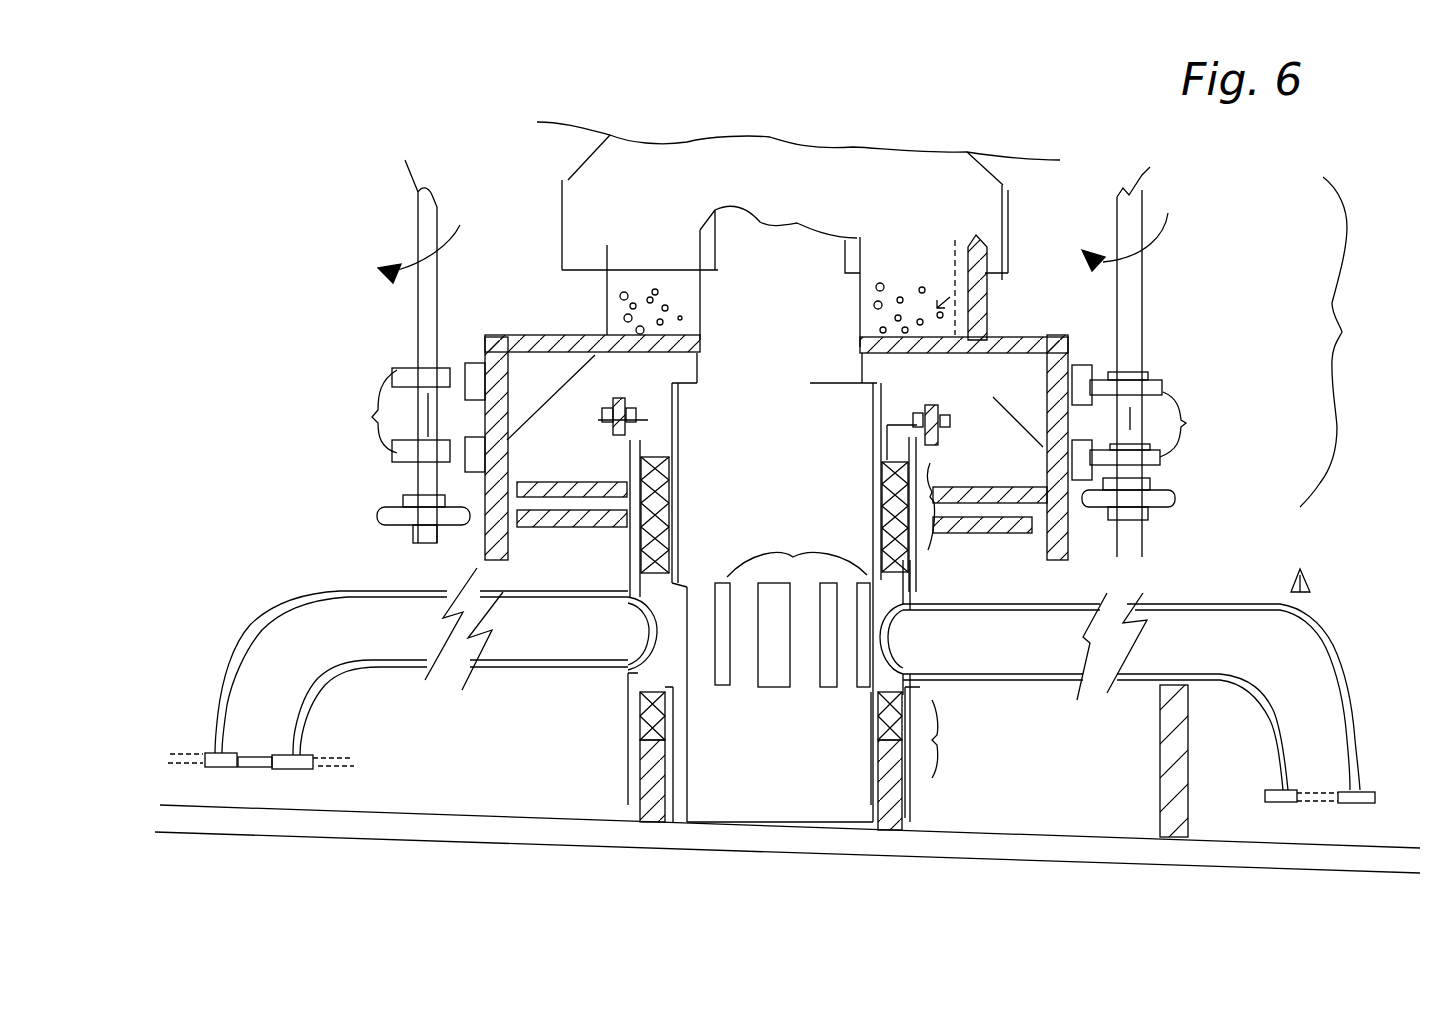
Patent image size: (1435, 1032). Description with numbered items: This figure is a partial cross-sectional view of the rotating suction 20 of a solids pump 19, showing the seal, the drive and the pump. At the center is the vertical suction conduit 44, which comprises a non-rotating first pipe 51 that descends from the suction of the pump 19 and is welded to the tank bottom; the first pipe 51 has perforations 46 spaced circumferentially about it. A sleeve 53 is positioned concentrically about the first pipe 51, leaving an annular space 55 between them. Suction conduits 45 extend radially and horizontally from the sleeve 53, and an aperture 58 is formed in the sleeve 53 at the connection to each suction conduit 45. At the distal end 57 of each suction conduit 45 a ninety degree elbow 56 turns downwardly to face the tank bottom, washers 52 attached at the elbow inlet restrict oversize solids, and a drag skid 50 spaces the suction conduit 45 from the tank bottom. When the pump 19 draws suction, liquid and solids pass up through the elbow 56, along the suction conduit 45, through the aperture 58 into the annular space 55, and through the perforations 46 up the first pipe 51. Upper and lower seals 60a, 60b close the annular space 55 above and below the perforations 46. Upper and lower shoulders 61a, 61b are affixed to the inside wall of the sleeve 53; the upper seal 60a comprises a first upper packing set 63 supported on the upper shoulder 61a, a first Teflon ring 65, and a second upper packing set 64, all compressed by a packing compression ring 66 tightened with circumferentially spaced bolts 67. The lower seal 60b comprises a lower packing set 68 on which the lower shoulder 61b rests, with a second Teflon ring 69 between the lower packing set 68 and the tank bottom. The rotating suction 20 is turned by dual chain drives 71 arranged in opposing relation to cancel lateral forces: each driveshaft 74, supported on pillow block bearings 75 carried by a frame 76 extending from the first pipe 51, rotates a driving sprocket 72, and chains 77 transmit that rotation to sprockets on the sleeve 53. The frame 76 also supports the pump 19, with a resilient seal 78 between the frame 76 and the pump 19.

The solids pump 19 is at (686, 167).
The rotating suction 20 is at (1310, 580).
The vertical suction conduit 44 is at (790, 440).
The suction conduit 45 is at (338, 587).
The perforations 46 is at (833, 597).
The drag skid 50 is at (1149, 751).
The first pipe 51 is at (680, 515).
The washers 52 is at (317, 762).
The sleeve 53 is at (628, 772).
The annular space 55 is at (912, 690).
The elbow 56 is at (248, 634).
The distal end 57 is at (790, 795).
The aperture 58 is at (637, 627).
The upper seal 60a is at (957, 488).
The lower seal 60b is at (959, 739).
The upper shoulder 61a is at (918, 578).
The lower shoulder 61b is at (917, 712).
The first upper packing set 63 is at (641, 565).
The second upper packing set 64 is at (630, 462).
The first Teflon ring 65 is at (628, 497).
The packing compression ring 66 is at (642, 420).
The bolts 67 is at (613, 398).
The lower packing set 68 is at (628, 724).
The second Teflon ring 69 is at (905, 802).
The dual chain drives 71 is at (1350, 342).
The driving sprocket 72 is at (377, 517).
The driveshaft 74 is at (420, 307).
The pillow block bearings 75 is at (773, 421).
The frame 76 is at (515, 335).
The chains 77 is at (530, 527).
The resilient seal 78 is at (607, 304).